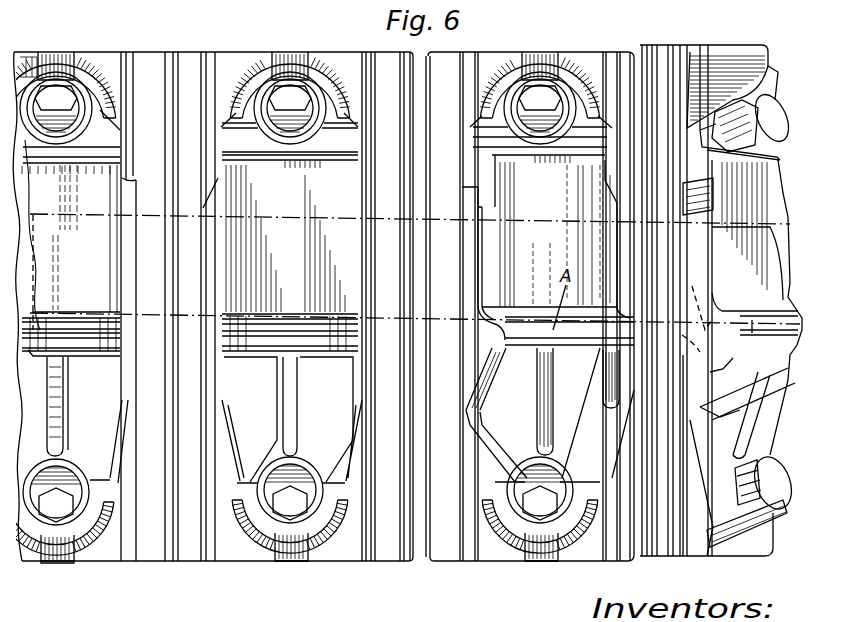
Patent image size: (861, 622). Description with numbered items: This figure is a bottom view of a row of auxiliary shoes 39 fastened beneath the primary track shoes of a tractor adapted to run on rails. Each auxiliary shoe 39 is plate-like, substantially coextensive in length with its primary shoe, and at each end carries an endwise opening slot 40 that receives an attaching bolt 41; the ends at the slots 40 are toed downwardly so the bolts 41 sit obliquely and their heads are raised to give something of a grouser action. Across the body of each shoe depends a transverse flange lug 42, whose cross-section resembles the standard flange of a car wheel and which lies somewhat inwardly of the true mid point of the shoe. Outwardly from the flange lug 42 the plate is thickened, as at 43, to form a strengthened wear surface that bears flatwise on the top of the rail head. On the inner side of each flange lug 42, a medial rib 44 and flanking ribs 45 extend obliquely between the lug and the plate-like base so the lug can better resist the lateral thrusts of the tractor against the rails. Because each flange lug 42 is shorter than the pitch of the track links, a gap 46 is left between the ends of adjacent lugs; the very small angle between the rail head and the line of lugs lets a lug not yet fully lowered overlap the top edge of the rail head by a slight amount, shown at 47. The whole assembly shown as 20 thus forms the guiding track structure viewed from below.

The track frame 20 is at (132, 46).
The auxiliary shoe 39 is at (248, 58).
The endwise opening slot 40 is at (64, 561).
The bolt 41 is at (66, 482).
The flange lug 42 is at (75, 325).
The thickened plate portion 43 is at (116, 251).
The medial rib 44 is at (64, 404).
The flanking rib 45 is at (130, 381).
The gap 46 is at (443, 343).
The lateral overlap 47 is at (758, 317).